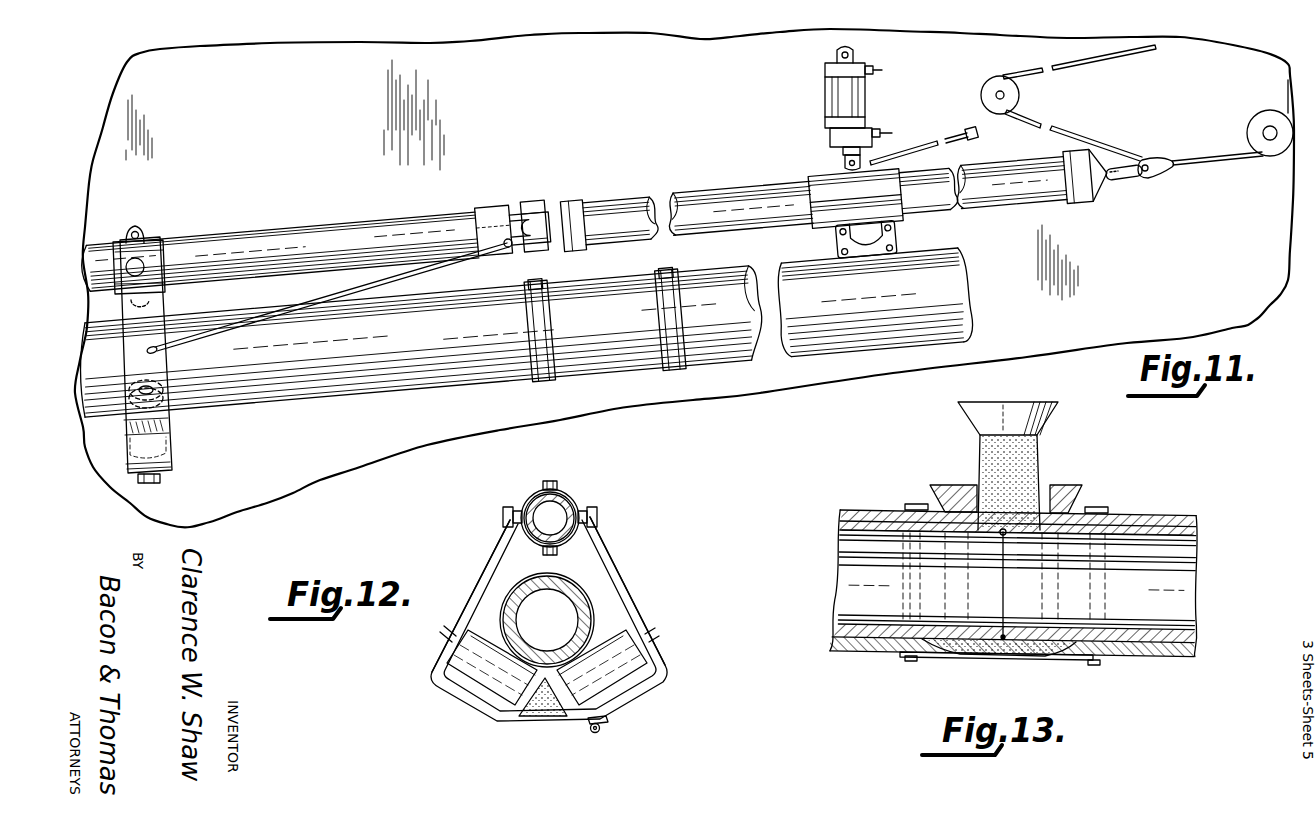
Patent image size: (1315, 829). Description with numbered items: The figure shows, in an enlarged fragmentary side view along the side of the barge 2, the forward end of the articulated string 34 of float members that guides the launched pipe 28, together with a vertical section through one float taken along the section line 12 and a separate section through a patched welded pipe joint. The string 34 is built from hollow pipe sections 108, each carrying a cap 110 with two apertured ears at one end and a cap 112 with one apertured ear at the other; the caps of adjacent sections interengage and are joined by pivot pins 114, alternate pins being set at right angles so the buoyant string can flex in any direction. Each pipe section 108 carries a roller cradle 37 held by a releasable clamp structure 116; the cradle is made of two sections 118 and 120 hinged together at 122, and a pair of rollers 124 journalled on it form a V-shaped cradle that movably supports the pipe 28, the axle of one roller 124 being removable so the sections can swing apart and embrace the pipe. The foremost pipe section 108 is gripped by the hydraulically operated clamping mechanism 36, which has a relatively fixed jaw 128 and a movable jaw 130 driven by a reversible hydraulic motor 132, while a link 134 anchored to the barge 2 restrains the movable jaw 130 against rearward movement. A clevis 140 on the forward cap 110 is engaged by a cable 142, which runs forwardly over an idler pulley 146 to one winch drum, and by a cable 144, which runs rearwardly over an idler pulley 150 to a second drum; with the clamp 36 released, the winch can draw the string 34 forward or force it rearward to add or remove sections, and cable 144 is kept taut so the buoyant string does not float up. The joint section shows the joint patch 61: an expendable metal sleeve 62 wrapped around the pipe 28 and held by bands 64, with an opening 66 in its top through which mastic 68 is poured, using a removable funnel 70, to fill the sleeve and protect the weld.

In FIG. 11, the barge 2 is at (209, 39).
In FIG. 11, the section line 12— 12 is at (177, 268).
In FIG. 11, the pipe 28 is at (955, 262).
In FIG. 12, the pipe 28 is at (558, 588).
In FIG. 13, the pipe 28 is at (1162, 524).
In FIG. 11, the articulated string of float members 34 is at (352, 220).
In FIG. 11, the hydraulically operated clamping mechanism 36 is at (806, 235).
In FIG. 11, the roller cradle 37 is at (116, 442).
In FIG. 12, the roller cradle 37 is at (627, 586).
In FIG. 11, the joint patch 61 is at (600, 297).
In FIG. 13, the joint patch 61 is at (966, 657).
In FIG. 11, the expendable metal sleeve 62 is at (642, 370).
In FIG. 13, the expendable metal sleeve 62 is at (1020, 658).
In FIG. 11, the bands 64 is at (667, 276).
In FIG. 13, the bands 64 is at (915, 505).
In FIG. 13, the opening 66 is at (1058, 488).
In FIG. 13, the mastic 68 is at (985, 455).
In FIG. 13, the funnel 70 is at (947, 492).
In FIG. 11, the hollow pipe section 108 is at (425, 221).
In FIG. 12, the hollow pipe section 108 is at (565, 498).
In FIG. 11, the cap 110 is at (487, 212).
In FIG. 11, the cap 112 is at (578, 212).
In FIG. 11, the pivot pin 114 is at (537, 207).
In FIG. 11, the releasable clamp structure 116 is at (125, 236).
In FIG. 12, the releasable clamp structure 116 is at (535, 497).
In FIG. 12, the cradle section 118 is at (480, 592).
In FIG. 11, the cradle section 120 is at (152, 362).
In FIG. 12, the cradle section 120 is at (612, 575).
In FIG. 12, the hinge 122 is at (596, 734).
In FIG. 11, the roller 124 is at (156, 390).
In FIG. 12, the roller 124 is at (462, 672).
In FIG. 11, the fixed clamping jaw 128 is at (897, 213).
In FIG. 11, the movable jaw 130 is at (818, 185).
In FIG. 11, the reversible hydraulic motor 132 is at (856, 94).
In FIG. 11, the link 134 is at (946, 139).
In FIG. 11, the clevis 140 is at (1130, 176).
In FIG. 11, the cable 142 is at (1212, 166).
In FIG. 11, the cable 144 is at (1096, 64).
In FIG. 11, the idler pulley 146 is at (1265, 112).
In FIG. 11, the idler pulley 150 is at (1000, 88).